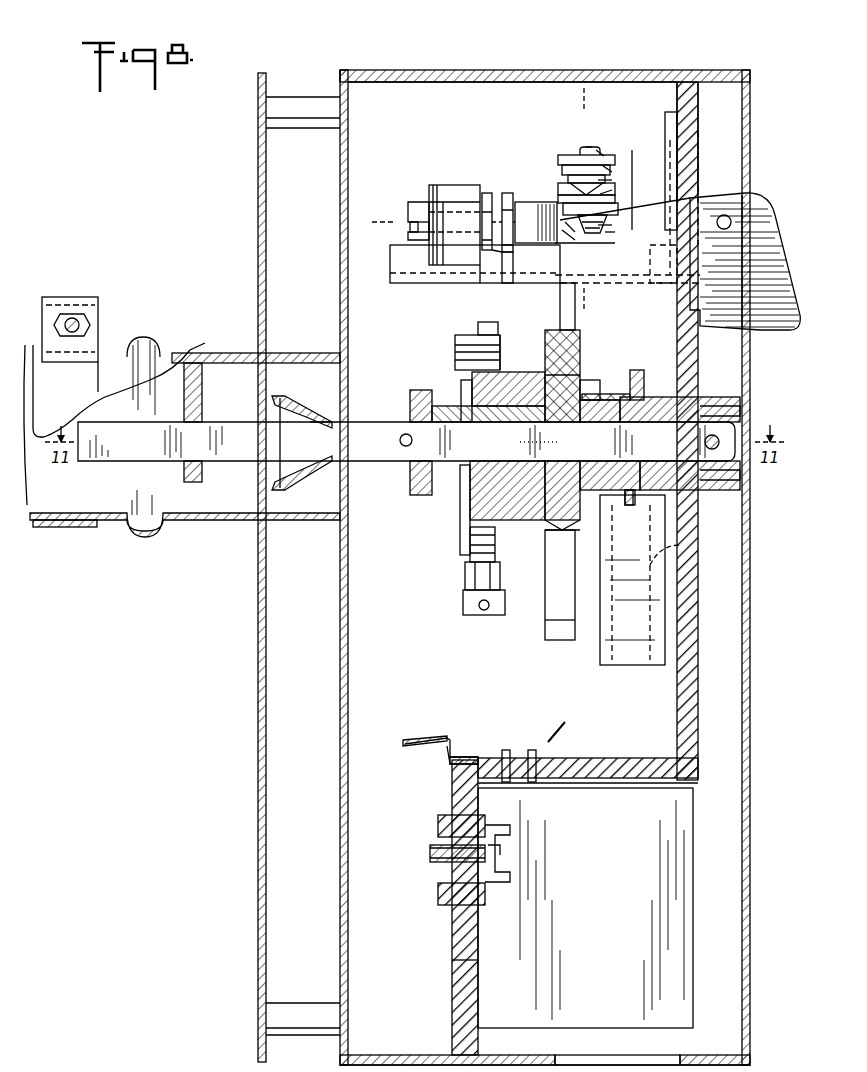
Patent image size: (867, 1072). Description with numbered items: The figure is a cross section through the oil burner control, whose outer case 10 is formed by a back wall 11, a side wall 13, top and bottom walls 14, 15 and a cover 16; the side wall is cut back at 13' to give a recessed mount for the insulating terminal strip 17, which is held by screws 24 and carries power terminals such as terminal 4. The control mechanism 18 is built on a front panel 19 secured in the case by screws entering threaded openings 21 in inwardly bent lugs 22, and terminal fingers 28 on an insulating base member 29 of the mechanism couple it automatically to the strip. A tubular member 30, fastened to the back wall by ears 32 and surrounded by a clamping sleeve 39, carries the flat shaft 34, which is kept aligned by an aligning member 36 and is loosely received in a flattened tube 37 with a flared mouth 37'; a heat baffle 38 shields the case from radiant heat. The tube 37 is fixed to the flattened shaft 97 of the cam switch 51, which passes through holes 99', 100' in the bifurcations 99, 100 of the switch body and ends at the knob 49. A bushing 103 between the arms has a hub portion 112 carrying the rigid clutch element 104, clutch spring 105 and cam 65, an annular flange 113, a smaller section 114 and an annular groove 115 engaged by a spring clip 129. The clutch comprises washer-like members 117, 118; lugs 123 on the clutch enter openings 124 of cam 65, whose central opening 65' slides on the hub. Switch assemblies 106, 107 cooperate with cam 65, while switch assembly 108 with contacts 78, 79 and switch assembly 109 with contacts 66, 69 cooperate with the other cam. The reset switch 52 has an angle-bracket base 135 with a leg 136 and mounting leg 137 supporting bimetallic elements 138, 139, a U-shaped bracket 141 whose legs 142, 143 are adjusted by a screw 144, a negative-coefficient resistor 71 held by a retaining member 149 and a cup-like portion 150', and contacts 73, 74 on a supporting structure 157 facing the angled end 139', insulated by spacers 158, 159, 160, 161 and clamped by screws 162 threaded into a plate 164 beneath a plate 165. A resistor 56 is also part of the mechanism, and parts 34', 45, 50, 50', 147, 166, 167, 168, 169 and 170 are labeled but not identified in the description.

The power terminal 4 is at (486, 890).
The outer case 10 is at (374, 60).
The back wall 11 is at (340, 255).
The side wall 13 is at (512, 99).
The cut-back portion 13' is at (438, 977).
The top wall 14 is at (430, 70).
The bottom wall 15 is at (378, 1055).
The cover 16 is at (750, 805).
The insulating terminal strip 17 is at (467, 975).
The control mechanism 18 is at (528, 138).
The front panel 19 is at (698, 722).
The threaded openings 21 is at (410, 750).
The lugs 22 is at (555, 100).
The screws 24 is at (386, 220).
The terminal fingers 28 is at (452, 740).
The base member 29 is at (596, 758).
The tubular member 30 is at (175, 355).
The ears 32 is at (345, 358).
The flat shaft 34 is at (406, 458).
The shaft portion 34' is at (330, 436).
The aligning member 36 is at (203, 392).
The flattened tube 37 is at (302, 450).
The flared mouth 37' is at (263, 451).
The heat baffle 38 is at (266, 302).
The clamping sleeve 39 is at (92, 338).
The container 45 is at (604, 1038).
The knob 49 is at (702, 485).
The lever 50 is at (749, 206).
The lever pivot 50' is at (757, 203).
The cam operated sequence switch 51 is at (462, 498).
The lock-out and reset switch 52 is at (438, 289).
The resistor 56 is at (680, 546).
The cam 65 is at (577, 371).
The central opening 65' is at (562, 364).
The contact 66 is at (488, 323).
The contact 69 is at (500, 350).
The negative temperature coefficient resistor 71 is at (487, 194).
The contact member 73 is at (612, 190).
The contact member 74 is at (606, 168).
The contact 78 is at (470, 545).
The contact 79 is at (465, 577).
The flattened shaft 97 is at (540, 440).
The bifurcation 99 is at (408, 479).
The hole 99' is at (429, 392).
The bifurcation 100 is at (680, 392).
The hole 100' is at (645, 507).
The bushing 103 is at (592, 425).
The rigid clutch element 104 is at (638, 366).
The clutch spring 105 is at (612, 394).
The switch assembly 106 is at (556, 314).
The switch assembly 107 is at (540, 606).
The switch assembly 108 is at (462, 596).
The switch assembly 109 is at (462, 352).
The hub portion 112 is at (563, 495).
The annular flange 113 is at (632, 580).
The smaller diameter section 114 is at (507, 490).
The annular groove 115 is at (466, 422).
The washer-like member 117 is at (561, 530).
The washer-like member 118 is at (625, 500).
The lugs 123 is at (590, 380).
The openings 124 is at (592, 468).
The spring clip 129 is at (488, 397).
The base member 135 is at (690, 142).
The outwardly extending leg 136 is at (420, 284).
The mounting leg 137 is at (666, 114).
The bimetallic element 138 is at (443, 210).
The bimetallic element 139 is at (500, 203).
The angled end 139' is at (579, 246).
The U-shaped bracket 141 is at (455, 183).
The leg 142 is at (432, 200).
The opposing leg 143 is at (510, 283).
The screw 144 is at (408, 232).
The block 147 is at (432, 240).
The retaining member 149 is at (470, 282).
The cup-like portion 150' is at (490, 279).
The supporting structure 157 is at (600, 233).
The insulating spacer 158 is at (614, 200).
The insulating spacer 159 is at (602, 185).
The insulating spacer 160 is at (570, 158).
The insulating spacer 161 is at (580, 150).
The screws 162 is at (588, 147).
The plate 164 is at (615, 225).
The plate 165 is at (600, 152).
The edge 166 is at (620, 234).
The edge 167 is at (608, 188).
The edge 168 is at (572, 228).
The bar 169 is at (622, 209).
The shaft 170 is at (538, 242).